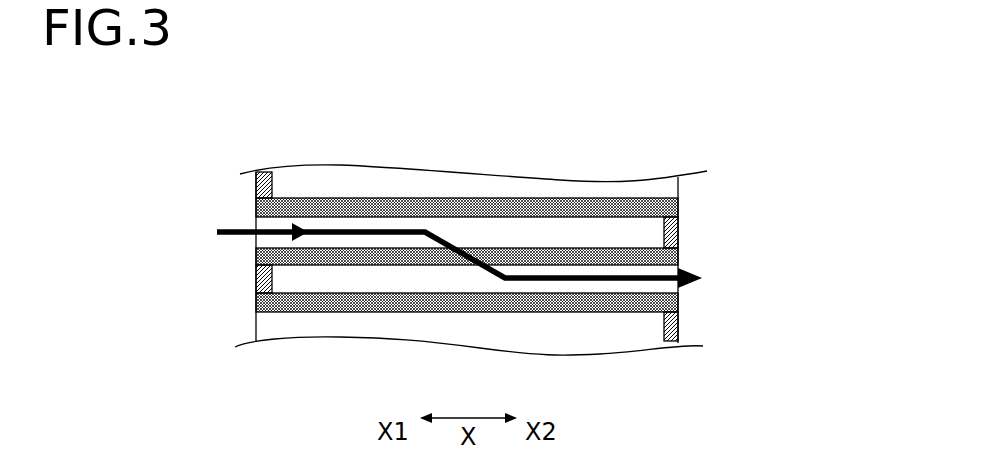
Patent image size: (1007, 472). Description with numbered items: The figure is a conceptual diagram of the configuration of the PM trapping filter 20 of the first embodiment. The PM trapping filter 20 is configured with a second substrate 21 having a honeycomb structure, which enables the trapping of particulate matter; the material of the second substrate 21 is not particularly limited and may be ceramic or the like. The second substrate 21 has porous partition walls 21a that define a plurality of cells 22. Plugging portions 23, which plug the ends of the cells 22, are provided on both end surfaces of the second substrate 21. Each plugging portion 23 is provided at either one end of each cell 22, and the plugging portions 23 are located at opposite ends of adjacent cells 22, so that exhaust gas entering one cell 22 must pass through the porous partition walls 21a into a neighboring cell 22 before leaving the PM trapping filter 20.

The PM trapping filter 20 is at (517, 231).
The second substrate 21 is at (479, 240).
The porous partition walls 21a is at (557, 205).
The cells 22 is at (262, 222).
The plugging portions 23 is at (257, 280).